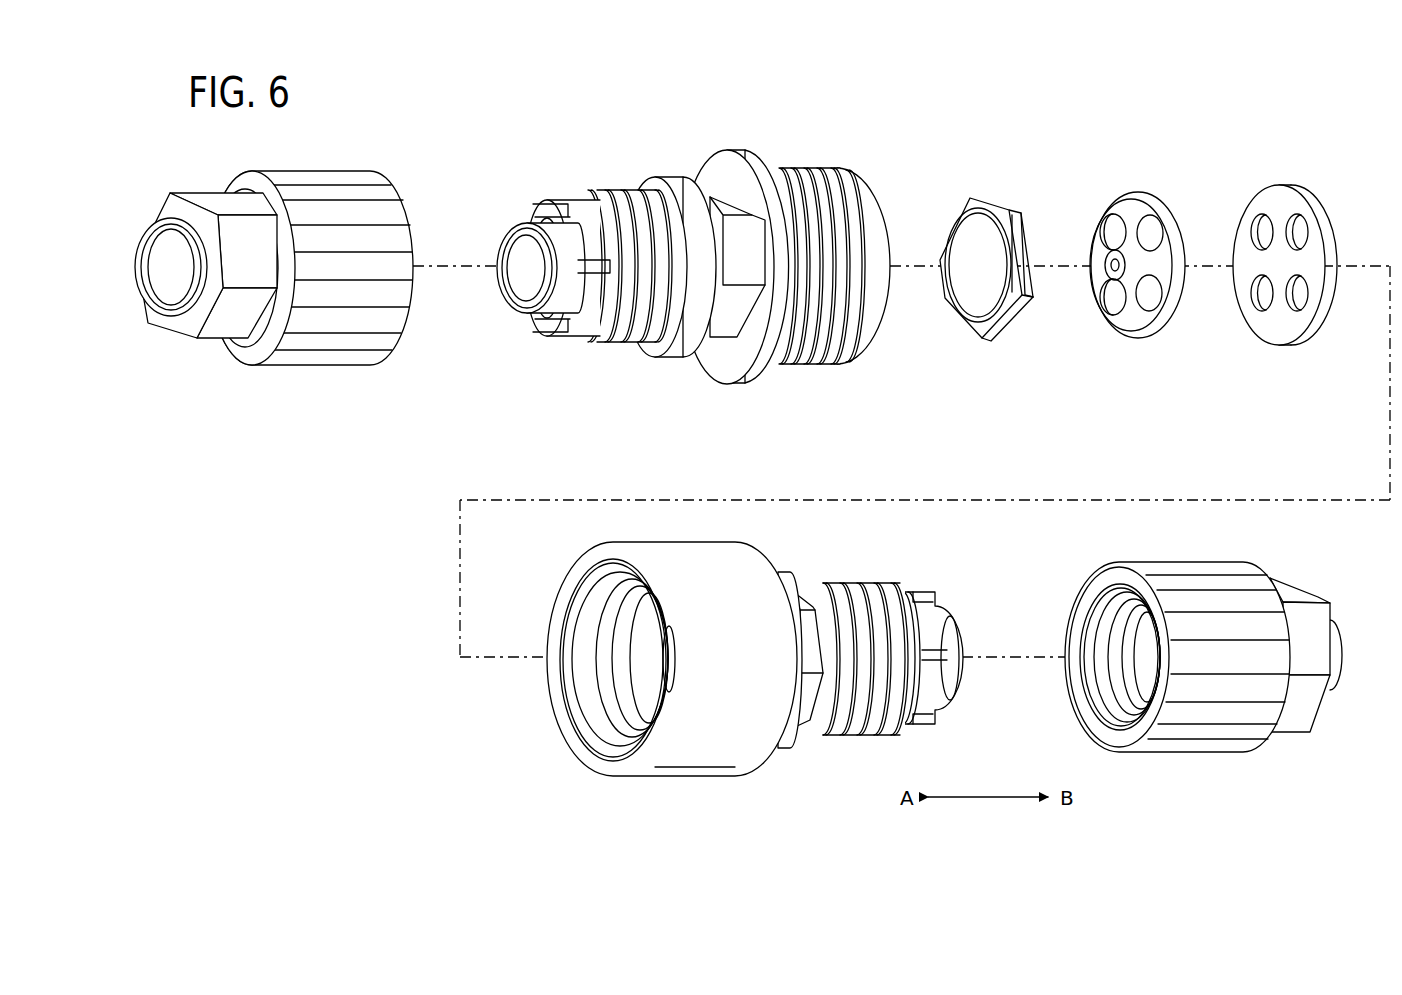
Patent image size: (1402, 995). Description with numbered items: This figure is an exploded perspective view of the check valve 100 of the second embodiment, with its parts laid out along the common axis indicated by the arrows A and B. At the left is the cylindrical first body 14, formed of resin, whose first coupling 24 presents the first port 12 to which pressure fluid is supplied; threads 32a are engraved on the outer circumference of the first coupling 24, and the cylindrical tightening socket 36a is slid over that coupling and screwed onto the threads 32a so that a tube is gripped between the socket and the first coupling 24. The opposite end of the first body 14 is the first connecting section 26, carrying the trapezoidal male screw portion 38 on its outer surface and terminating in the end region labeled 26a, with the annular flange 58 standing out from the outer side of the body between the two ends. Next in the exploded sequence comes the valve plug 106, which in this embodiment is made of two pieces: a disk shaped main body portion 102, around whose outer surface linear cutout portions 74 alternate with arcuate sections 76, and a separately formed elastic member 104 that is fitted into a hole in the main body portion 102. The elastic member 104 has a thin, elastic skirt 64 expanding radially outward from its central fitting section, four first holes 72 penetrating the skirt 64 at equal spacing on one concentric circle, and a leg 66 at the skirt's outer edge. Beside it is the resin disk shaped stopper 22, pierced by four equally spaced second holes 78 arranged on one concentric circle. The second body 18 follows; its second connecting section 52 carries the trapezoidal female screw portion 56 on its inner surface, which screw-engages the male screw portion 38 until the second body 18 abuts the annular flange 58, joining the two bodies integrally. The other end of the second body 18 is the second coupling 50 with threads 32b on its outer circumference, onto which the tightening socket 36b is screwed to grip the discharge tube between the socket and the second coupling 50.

The check valve 100 is at (1016, 109).
The first body 14 is at (695, 258).
The first port 12 is at (518, 282).
The first coupling 24 is at (575, 330).
The threads 32a is at (627, 195).
The annular flange 58 is at (712, 172).
The male screw portion 38 is at (822, 188).
The first connecting section 26 is at (800, 368).
The rear end portion 26a is at (882, 298).
The tightening socket 36a is at (300, 370).
The tightening socket 36b is at (1225, 772).
The main body portion 102 is at (1000, 282).
The cutout portions 74 is at (1022, 243).
The arcuate sections 76 is at (1028, 303).
The valve plug 106 is at (1142, 240).
The first holes 72 is at (1112, 226).
The skirt 64 is at (1158, 268).
The leg 66 is at (1168, 322).
The elastic member 104 is at (1116, 338).
The stopper 22 is at (1296, 268).
The second holes 78 is at (1296, 302).
The second body 18 is at (747, 687).
The female screw portion 56 is at (592, 627).
The second connecting section 52 is at (690, 772).
The threads 32b is at (870, 600).
The second coupling 50 is at (926, 601).